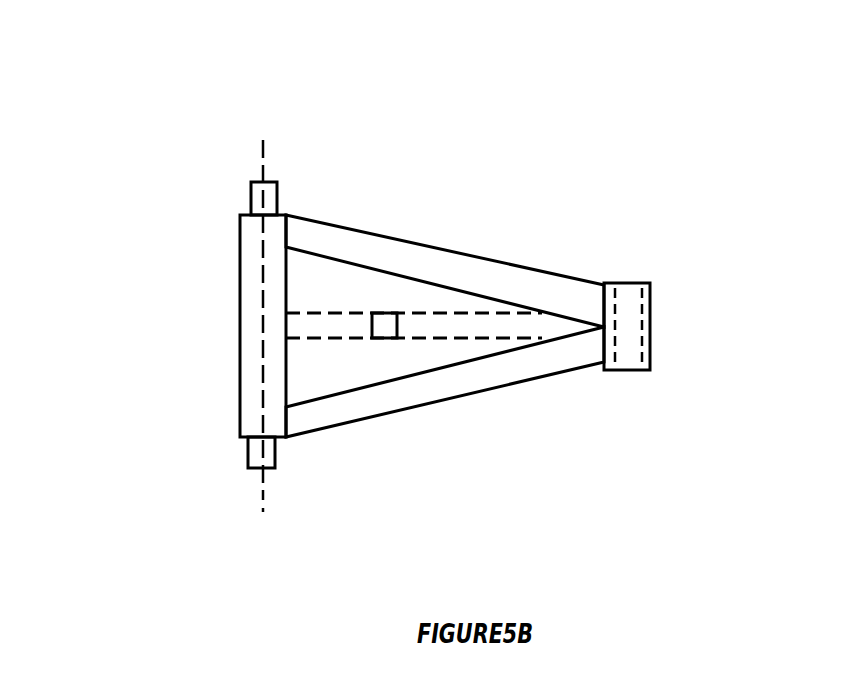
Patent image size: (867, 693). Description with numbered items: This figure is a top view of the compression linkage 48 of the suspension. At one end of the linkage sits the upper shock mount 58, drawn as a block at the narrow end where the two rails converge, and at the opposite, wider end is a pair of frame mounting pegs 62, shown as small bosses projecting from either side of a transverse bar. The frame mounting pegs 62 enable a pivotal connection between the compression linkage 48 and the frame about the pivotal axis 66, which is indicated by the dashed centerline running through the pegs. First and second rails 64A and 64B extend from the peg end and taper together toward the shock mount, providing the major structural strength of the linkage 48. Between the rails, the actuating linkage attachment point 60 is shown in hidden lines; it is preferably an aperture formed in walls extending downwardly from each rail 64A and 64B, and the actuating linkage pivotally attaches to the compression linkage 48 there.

The compression linkage 48 is at (603, 193).
The upper shock mount 58 is at (672, 350).
The actuating linkage attachment point 60 is at (392, 352).
The frame mounting pegs 62 is at (230, 208).
The first rail 64A is at (418, 244).
The second rail 64B is at (367, 422).
The pivotal axis 66 is at (263, 149).